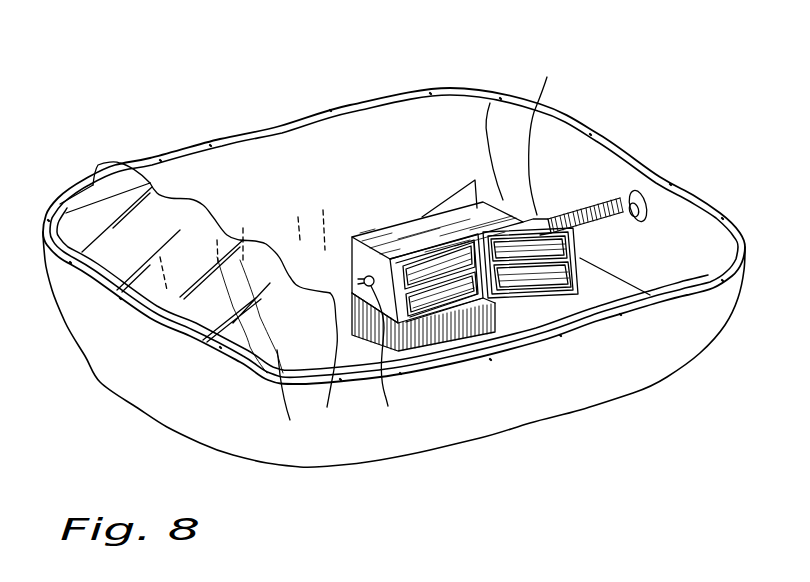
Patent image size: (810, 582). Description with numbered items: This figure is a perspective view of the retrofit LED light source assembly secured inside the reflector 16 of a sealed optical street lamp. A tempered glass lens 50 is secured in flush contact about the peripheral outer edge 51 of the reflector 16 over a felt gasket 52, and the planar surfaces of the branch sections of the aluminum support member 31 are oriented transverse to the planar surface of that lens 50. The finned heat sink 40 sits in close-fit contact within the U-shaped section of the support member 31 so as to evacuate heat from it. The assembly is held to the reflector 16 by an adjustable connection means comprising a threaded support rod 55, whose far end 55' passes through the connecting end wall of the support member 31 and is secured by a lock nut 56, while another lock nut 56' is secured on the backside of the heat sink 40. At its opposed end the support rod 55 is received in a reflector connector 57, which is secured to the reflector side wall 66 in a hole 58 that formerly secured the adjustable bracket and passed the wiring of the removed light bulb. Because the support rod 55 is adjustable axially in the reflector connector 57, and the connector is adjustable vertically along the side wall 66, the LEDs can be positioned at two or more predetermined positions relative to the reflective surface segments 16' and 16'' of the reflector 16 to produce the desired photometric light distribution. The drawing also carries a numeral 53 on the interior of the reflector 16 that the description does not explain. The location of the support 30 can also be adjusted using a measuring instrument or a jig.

The reflector 16 is at (394, 349).
The reflective surface segment 16' is at (289, 366).
The reflective surface segment 16'' is at (384, 119).
The support 30 is at (487, 317).
The support member 31 is at (402, 221).
The finned heat sink 40 is at (467, 220).
The lens 50 is at (90, 173).
The peripheral outer edge 51 is at (458, 91).
The felt gasket 52 is at (589, 128).
The inner wall ridge 53 is at (250, 200).
The threaded support rod 55 is at (573, 189).
The far end 55' is at (324, 301).
The lock nut 56 is at (390, 361).
The lock nut 56' is at (552, 128).
The reflector connector 57 is at (628, 191).
The hole 58 is at (647, 220).
The reflector side wall 66 is at (706, 245).